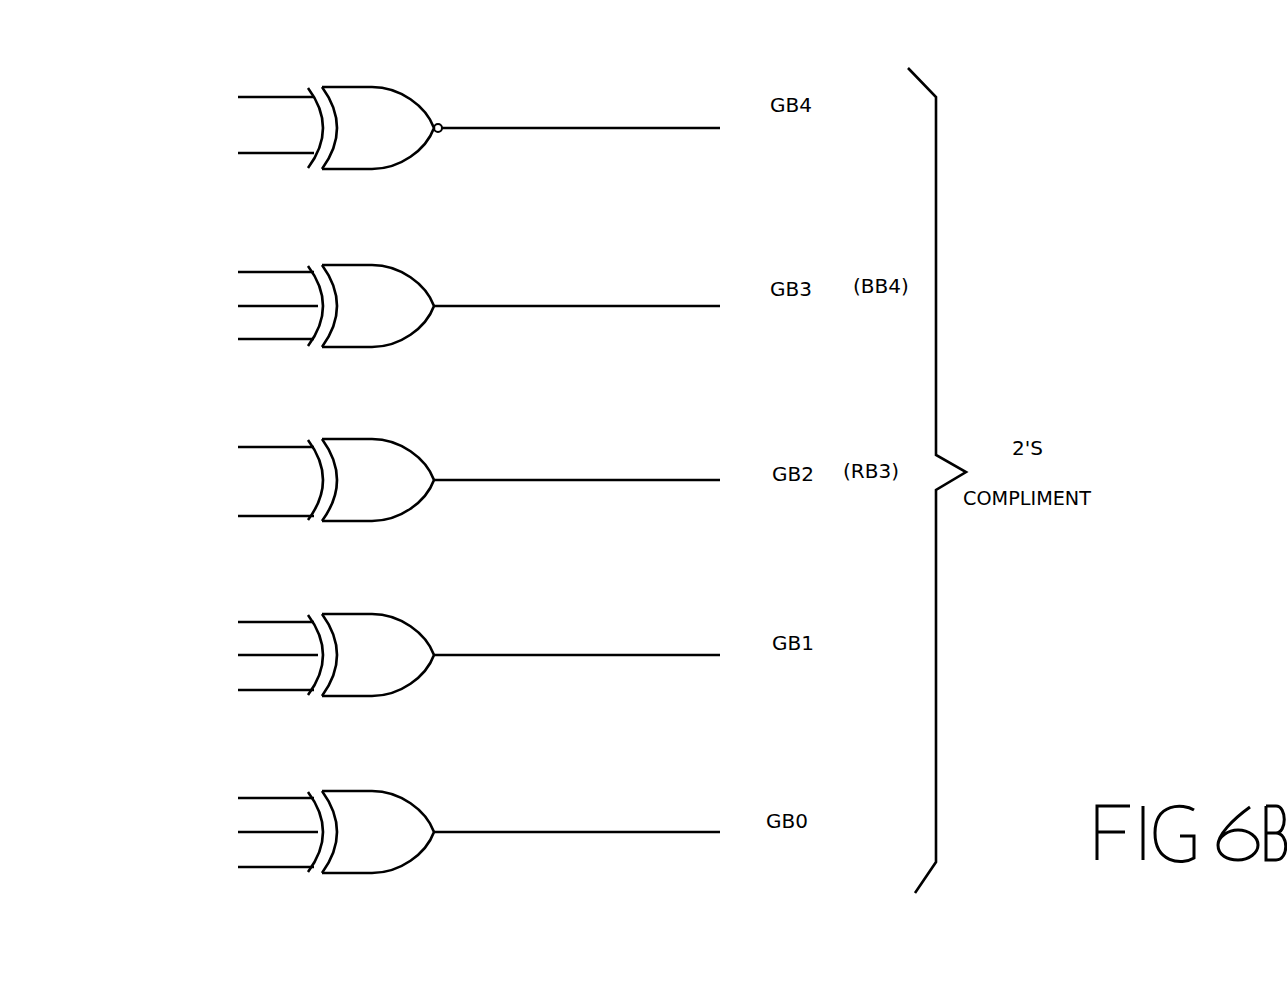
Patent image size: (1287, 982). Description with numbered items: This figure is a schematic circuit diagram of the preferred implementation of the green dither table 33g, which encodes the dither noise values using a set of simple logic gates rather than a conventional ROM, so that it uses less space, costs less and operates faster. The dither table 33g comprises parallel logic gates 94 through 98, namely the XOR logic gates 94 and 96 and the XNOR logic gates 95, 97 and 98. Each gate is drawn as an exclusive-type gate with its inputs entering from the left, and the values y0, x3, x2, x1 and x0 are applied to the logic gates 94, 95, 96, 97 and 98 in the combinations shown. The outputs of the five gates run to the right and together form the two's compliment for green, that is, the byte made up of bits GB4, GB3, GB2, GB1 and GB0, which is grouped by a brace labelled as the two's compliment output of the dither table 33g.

The XOR logic gate 94 is at (420, 106).
The XNOR logic gate 95 is at (418, 280).
The XOR logic gate 96 is at (418, 455).
The XNOR logic gate 97 is at (412, 628).
The XNOR logic gate 98 is at (398, 800).
The dither table 33g is at (957, 42).